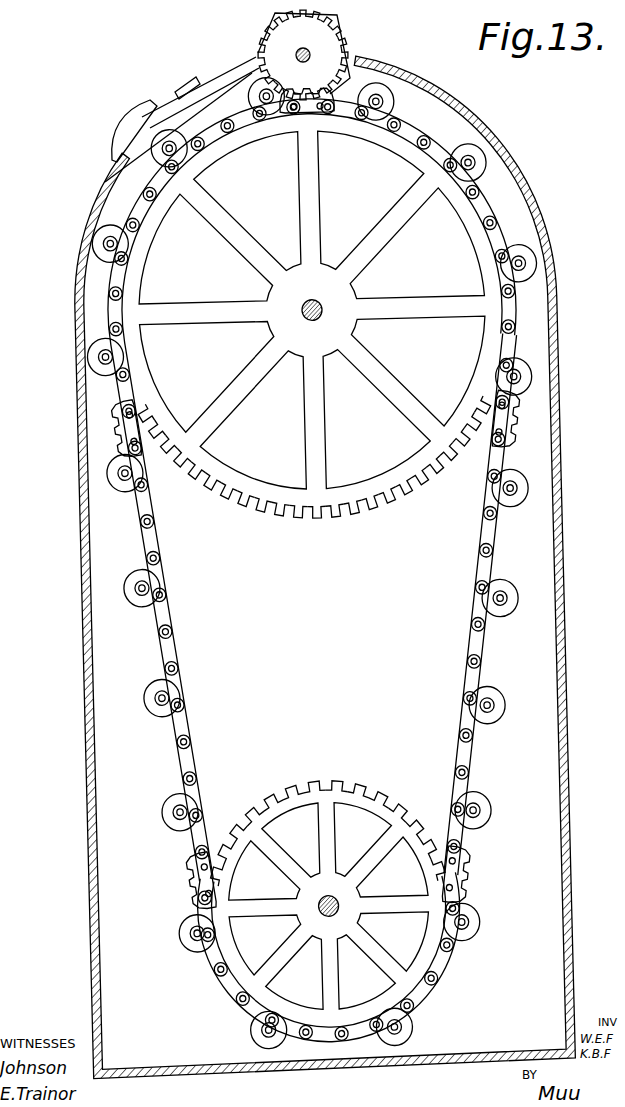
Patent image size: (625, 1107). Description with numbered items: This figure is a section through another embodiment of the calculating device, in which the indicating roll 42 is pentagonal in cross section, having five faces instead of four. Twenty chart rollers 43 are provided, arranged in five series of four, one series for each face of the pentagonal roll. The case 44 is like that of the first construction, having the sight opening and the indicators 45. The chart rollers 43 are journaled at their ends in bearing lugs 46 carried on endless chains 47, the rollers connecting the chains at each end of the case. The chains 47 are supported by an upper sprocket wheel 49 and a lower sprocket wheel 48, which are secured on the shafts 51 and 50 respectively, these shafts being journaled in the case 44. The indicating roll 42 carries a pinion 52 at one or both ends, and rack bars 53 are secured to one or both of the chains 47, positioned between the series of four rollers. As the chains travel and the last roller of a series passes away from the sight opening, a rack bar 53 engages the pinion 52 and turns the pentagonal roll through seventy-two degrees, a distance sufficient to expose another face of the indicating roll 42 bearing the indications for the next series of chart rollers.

The indicating roll 42 is at (338, 20).
The chart rollers 43 is at (165, 153).
The case 44 is at (558, 428).
The indicators 45 is at (181, 88).
The bearing lugs 46 is at (498, 604).
The endless chains 47 is at (490, 551).
The sprocket wheel 48 is at (331, 792).
The sprocket wheel 49 is at (331, 520).
The shaft 50 is at (326, 900).
The shaft 51 is at (316, 320).
The pinion 52 is at (325, 51).
The rack bars 53 is at (306, 104).